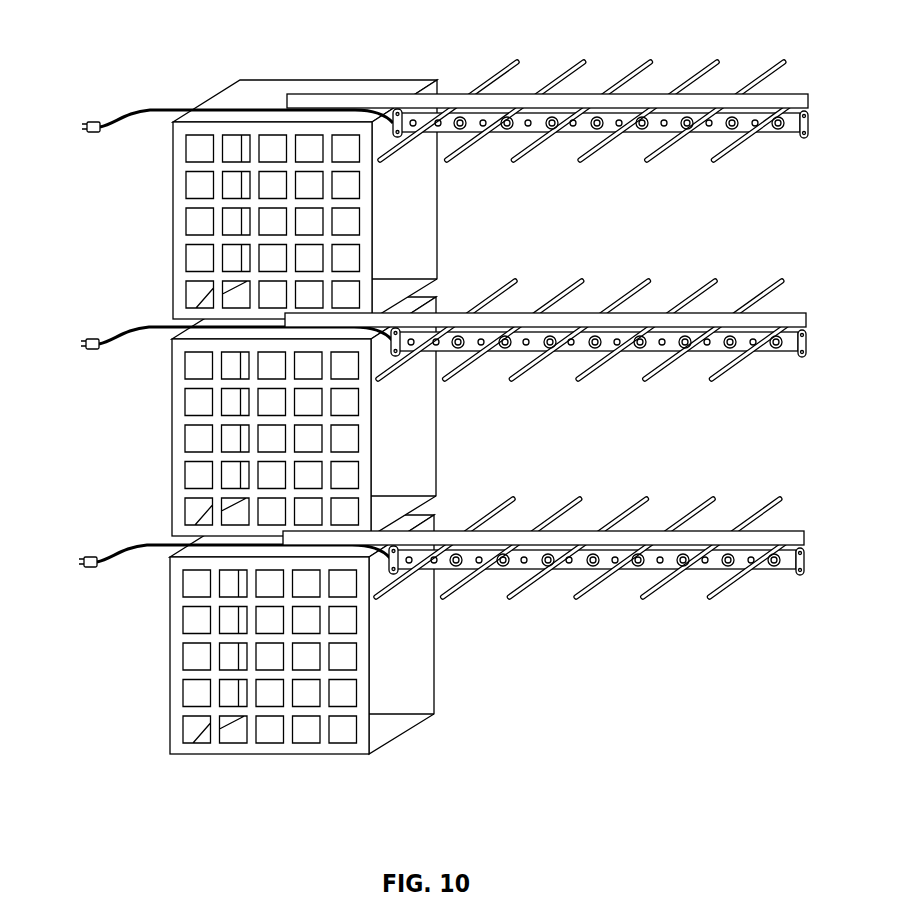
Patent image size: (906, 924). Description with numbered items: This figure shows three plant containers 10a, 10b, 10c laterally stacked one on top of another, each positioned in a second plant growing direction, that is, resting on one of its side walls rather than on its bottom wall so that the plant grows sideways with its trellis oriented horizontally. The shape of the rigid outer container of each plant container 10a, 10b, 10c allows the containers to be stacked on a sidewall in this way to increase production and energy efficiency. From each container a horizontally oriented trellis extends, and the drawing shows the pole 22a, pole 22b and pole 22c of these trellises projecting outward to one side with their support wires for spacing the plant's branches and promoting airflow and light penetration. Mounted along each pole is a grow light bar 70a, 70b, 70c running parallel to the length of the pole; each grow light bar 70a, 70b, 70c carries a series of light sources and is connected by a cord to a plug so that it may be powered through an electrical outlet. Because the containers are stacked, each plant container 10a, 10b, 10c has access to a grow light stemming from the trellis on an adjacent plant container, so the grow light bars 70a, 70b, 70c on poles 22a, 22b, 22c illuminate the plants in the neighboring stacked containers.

The plant container 10a is at (98, 226).
The plant container 10b is at (238, 416).
The plant container 10c is at (236, 634).
The pole 22a is at (573, 96).
The pole 22b is at (545, 300).
The pole 22c is at (543, 518).
The grow light bar 70a is at (726, 118).
The grow light bar 70b is at (602, 291).
The grow light bar 70c is at (600, 509).